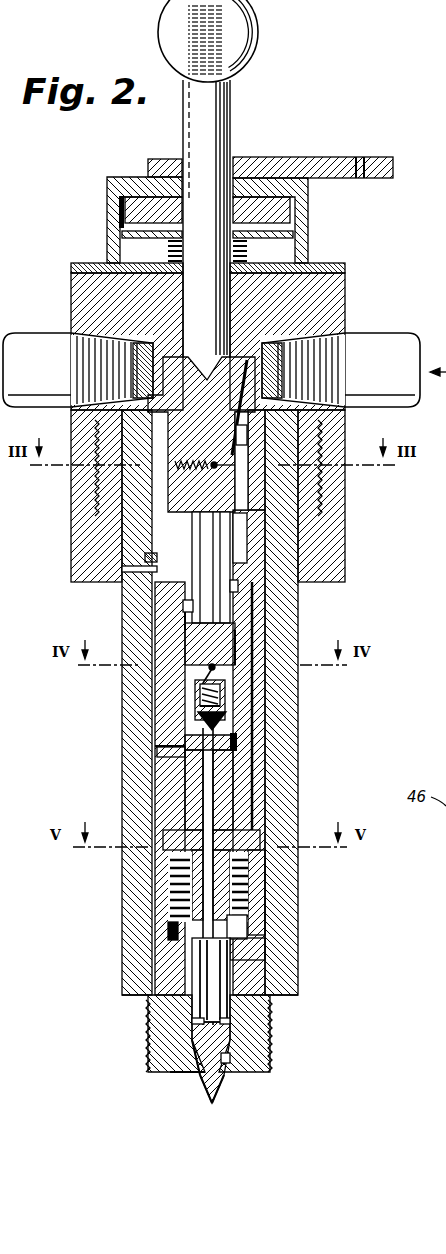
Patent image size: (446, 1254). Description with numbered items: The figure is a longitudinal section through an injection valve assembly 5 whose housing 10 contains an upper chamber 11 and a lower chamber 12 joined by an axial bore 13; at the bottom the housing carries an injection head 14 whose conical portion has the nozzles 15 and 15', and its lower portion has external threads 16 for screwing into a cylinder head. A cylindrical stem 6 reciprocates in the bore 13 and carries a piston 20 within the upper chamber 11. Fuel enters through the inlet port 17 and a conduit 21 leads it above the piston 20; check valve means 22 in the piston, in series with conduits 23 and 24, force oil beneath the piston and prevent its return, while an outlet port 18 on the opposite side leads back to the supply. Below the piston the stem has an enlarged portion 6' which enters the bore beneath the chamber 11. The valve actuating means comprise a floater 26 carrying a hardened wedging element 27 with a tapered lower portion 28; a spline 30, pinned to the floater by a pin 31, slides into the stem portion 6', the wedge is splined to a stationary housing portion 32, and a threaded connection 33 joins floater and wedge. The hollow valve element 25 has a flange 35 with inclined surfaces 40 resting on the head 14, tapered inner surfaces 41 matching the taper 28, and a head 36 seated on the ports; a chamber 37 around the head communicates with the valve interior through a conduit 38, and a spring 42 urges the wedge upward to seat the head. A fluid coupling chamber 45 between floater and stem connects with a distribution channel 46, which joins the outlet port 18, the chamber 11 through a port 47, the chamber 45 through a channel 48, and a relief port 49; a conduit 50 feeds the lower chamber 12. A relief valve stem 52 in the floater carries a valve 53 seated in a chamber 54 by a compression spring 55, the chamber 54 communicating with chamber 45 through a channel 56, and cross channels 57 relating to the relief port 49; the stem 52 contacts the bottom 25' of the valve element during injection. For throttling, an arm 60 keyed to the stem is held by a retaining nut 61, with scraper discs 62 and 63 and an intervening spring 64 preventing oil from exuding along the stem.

The housing body 5 is at (348, 278).
The cylindrical stem 6 is at (214, 179).
The enlarged stem portion 6' is at (289, 567).
The housing 10 is at (122, 692).
The upper chamber 11 is at (243, 538).
The lower chamber 12 is at (249, 905).
The axial bore 13 is at (236, 585).
The injection head 14 is at (190, 1075).
The nozzle 15 is at (189, 1104).
The nozzle 15' is at (232, 1103).
The external threads 16 is at (272, 1040).
The inlet port 17 is at (392, 345).
The outlet port 18 is at (30, 345).
The piston 20 is at (238, 490).
The conduit 21 is at (250, 407).
The check valve means 22 is at (212, 456).
The conduit 23 is at (248, 447).
The conduit 24 is at (172, 490).
The valve element 25 is at (146, 1013).
The bottom of valve element 25' is at (277, 1011).
The floater 26 is at (193, 775).
The wedging element 27 is at (168, 882).
The tapered lower portion 28 is at (170, 938).
The spline 30 is at (197, 570).
The pin 31 is at (237, 660).
The stationary housing portion 32 is at (155, 905).
The threaded connection 33 is at (195, 808).
The flange 35 is at (242, 928).
The head 36 is at (228, 1065).
The chamber 37 is at (180, 1073).
The conduit 38 is at (193, 1042).
The inclined surfaces 40 is at (252, 952).
The tapered inner surfaces 41 is at (262, 958).
The spring 42 is at (240, 880).
The fluid coupling chamber 45 is at (185, 620).
The distribution channel 46 is at (150, 570).
The port 47 is at (148, 555).
The channel 48 is at (192, 605).
The relief port 49 is at (160, 748).
The conduit 50 is at (240, 625).
The relief valve stem 52 is at (222, 728).
The valve 53 is at (224, 714).
The chamber 54 is at (222, 698).
The compression spring 55 is at (222, 684).
The channel 56 is at (225, 668).
The cross channels 57 is at (237, 742).
The arm 60 is at (306, 165).
The retaining nut 61 is at (120, 200).
The scraper disc 62 is at (130, 236).
The scraper disc 63 is at (118, 270).
The spring 64 is at (245, 252).